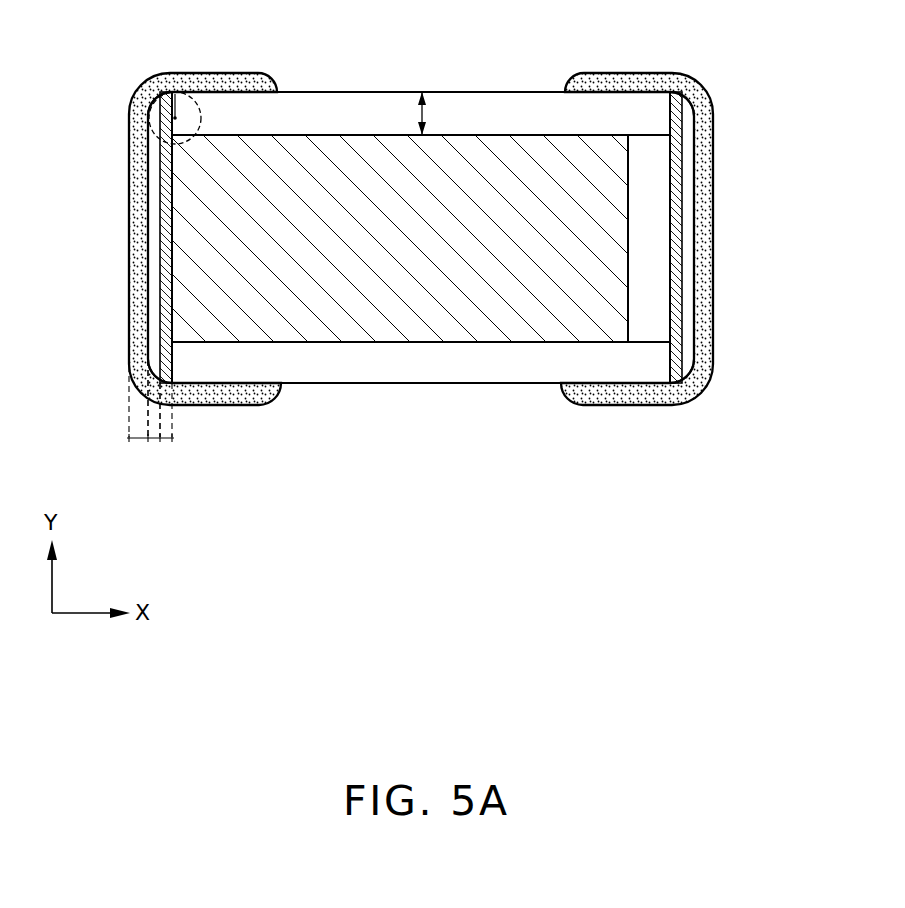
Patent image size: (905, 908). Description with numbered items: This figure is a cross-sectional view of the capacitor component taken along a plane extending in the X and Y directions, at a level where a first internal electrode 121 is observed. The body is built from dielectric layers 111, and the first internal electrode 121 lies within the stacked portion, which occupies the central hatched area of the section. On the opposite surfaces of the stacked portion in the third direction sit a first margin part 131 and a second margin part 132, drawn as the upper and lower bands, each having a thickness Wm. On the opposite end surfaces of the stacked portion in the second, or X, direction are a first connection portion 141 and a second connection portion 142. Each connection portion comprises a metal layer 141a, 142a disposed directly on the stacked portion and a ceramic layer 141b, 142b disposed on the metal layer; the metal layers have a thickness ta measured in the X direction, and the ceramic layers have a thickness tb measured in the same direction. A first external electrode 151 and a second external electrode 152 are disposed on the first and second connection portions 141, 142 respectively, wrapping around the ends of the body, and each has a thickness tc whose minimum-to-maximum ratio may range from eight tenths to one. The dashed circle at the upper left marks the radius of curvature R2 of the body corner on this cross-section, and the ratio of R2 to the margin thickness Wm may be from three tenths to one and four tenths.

The dielectric layer 111 is at (652, 320).
The first internal electrode 121 is at (404, 318).
The first margin part 131 is at (490, 362).
The second margin part 132 is at (533, 112).
The first connection portion 141 is at (52, 168).
The metal layer 141a is at (163, 183).
The ceramic layer 141b is at (156, 237).
The second connection portion 142 is at (793, 168).
The metal layer 142a is at (678, 181).
The ceramic layer 142b is at (688, 236).
The first external electrode 151 is at (178, 82).
The second external electrode 152 is at (645, 82).
The radius of curvature of the corner of the body R2 is at (180, 95).
The thickness of the margin part Wm is at (430, 113).
The thickness of the metal layer ta is at (165, 441).
The thickness of the ceramic layer tb is at (150, 441).
The thickness of the external electrode tc is at (137, 441).